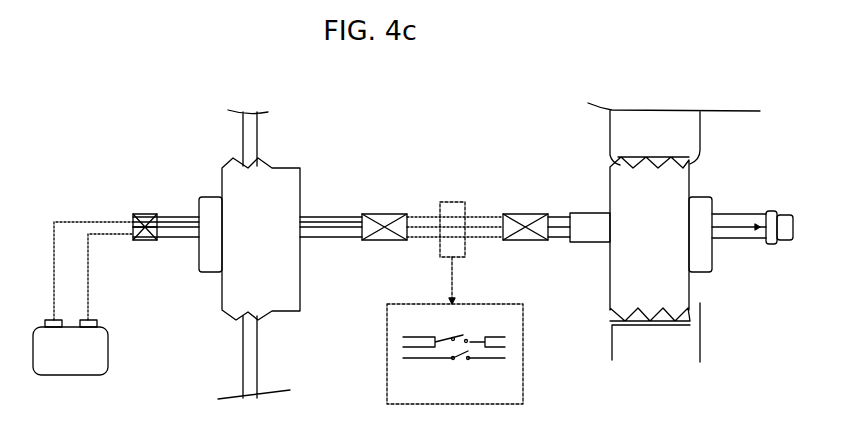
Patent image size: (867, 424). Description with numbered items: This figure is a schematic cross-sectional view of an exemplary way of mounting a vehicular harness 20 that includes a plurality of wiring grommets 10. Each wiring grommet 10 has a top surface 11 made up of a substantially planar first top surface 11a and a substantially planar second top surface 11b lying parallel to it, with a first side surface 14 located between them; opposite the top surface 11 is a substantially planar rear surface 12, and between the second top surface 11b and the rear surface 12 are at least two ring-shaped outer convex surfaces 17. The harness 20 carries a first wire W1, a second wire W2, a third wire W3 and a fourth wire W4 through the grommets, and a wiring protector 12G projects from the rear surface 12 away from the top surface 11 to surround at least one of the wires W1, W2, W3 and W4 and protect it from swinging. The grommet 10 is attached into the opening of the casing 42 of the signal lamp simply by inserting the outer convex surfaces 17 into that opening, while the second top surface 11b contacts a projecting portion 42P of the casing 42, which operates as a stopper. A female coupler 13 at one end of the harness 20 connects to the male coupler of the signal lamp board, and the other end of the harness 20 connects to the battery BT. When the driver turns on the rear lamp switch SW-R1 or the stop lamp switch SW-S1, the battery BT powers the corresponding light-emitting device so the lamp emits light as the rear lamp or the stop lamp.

The wiring grommet 10 is at (289, 152).
The top surface 11 is at (190, 136).
The first top surface 11a is at (200, 197).
The second top surface 11b is at (222, 193).
The rear surface 12 is at (303, 287).
The wiring protector 12G is at (597, 243).
The female coupler 13 is at (790, 235).
The first side surface 14 is at (212, 272).
The outer convex surface 17 is at (245, 164).
The vehicular harness 20 is at (339, 167).
The casing 42 is at (664, 135).
The projecting portion 42P is at (695, 158).
The first wire W1 is at (143, 215).
The second wire W2 is at (167, 216).
The third wire W3 is at (137, 240).
The fourth wire W4 is at (170, 242).
The battery BT is at (108, 350).
The rear lamp switch SW-R1 is at (455, 354).
The stop lamp switch SW-S1 is at (454, 373).